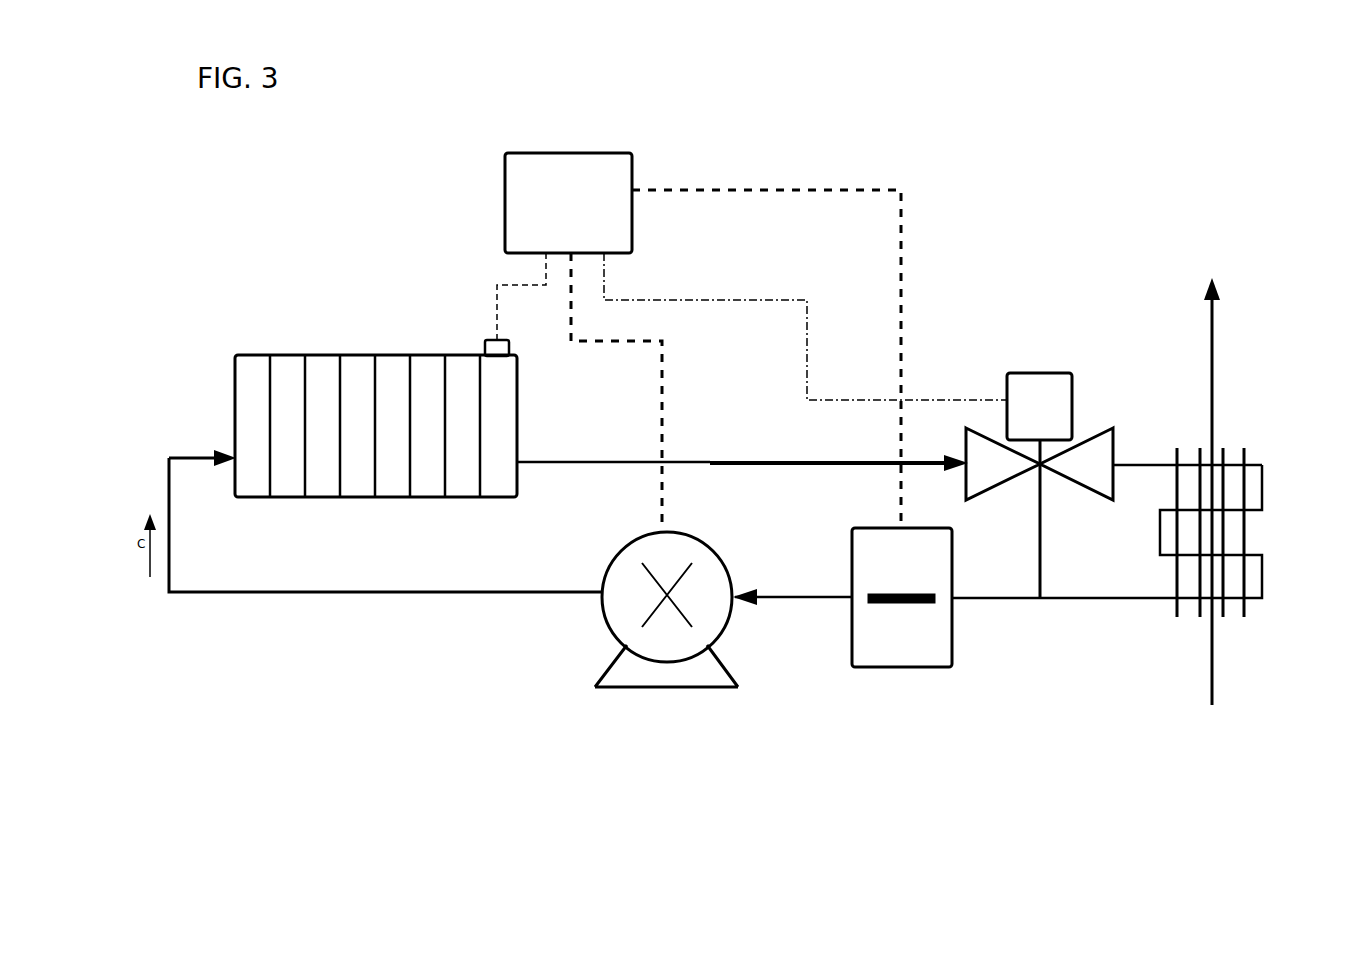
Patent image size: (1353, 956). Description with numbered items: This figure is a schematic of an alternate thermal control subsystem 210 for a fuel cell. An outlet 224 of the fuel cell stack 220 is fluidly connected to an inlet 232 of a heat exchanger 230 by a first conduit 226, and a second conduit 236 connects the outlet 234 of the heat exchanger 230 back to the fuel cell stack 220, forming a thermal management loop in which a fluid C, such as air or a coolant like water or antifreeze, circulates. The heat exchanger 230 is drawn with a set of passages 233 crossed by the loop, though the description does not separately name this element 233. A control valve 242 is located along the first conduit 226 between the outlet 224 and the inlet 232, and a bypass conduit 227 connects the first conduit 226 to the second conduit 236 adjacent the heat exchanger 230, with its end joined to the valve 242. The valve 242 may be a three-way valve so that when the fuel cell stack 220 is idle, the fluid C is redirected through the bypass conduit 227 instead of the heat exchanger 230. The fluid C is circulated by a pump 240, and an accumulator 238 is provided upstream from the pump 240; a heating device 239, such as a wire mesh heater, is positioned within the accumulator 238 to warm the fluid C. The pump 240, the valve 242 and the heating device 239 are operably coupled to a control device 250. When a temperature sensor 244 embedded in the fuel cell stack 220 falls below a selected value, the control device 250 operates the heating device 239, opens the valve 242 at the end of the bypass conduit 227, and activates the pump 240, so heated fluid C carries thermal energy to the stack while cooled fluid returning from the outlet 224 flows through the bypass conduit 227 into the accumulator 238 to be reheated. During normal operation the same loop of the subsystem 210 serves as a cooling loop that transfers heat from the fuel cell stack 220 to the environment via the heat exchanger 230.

The thermal control subsystem 210 is at (1090, 58).
The fuel cell stack 220 is at (282, 355).
The outlet 224 is at (518, 462).
The first conduit 226 is at (717, 460).
The bypass conduit 227 is at (1038, 540).
The heat exchanger 230 is at (1244, 455).
The inlet 232 is at (234, 457).
The radiator tubes 233 is at (1205, 458).
The outlet 234 is at (1210, 602).
The second conduit 236 is at (315, 592).
The accumulator 238 is at (881, 670).
The heating device 239 is at (912, 592).
The pump 240 is at (606, 620).
The control valve 242 is at (1072, 408).
The temperature sensor 244 is at (509, 348).
The control device 250 is at (527, 153).